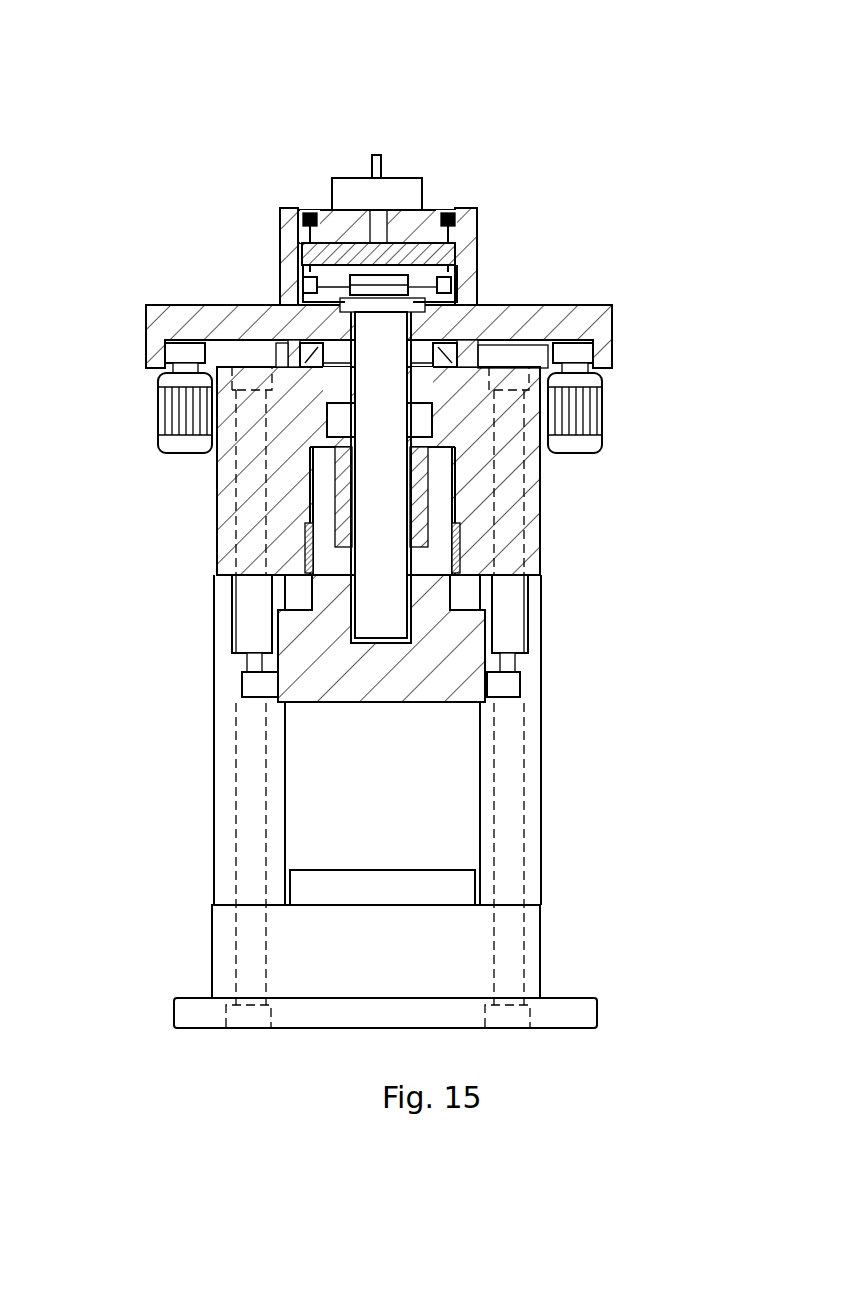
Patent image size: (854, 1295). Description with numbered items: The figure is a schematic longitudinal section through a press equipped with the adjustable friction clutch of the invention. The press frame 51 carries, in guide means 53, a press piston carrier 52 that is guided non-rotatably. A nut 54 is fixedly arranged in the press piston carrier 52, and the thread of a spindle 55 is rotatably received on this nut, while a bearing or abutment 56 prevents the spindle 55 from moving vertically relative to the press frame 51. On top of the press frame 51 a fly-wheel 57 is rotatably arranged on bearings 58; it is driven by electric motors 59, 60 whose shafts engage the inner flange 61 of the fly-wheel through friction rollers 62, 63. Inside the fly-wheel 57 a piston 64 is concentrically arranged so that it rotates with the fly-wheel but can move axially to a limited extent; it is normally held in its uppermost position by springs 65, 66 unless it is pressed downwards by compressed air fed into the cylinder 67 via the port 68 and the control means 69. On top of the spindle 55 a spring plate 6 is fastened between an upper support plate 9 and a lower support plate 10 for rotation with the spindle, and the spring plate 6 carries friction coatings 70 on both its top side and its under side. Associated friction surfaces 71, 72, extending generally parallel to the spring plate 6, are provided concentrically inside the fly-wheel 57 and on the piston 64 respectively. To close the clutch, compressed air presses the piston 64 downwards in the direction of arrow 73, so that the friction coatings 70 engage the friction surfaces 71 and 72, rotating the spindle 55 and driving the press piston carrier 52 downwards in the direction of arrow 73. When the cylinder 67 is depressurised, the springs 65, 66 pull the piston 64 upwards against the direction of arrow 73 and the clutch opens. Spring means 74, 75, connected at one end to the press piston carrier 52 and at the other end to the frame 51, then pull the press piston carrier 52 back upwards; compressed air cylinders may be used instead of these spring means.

The spring plate 6 is at (290, 326).
The upper support plate 9 is at (322, 262).
The lower support plate 10 is at (285, 363).
The press frame 51 is at (228, 525).
The press piston carrier 52 is at (402, 693).
The guide means 53 is at (275, 752).
The nut 54 is at (420, 482).
The spindle 55 is at (380, 560).
The bearing or abutment 56 is at (395, 425).
The fly-wheel 57 is at (605, 318).
The bearings 58 is at (456, 312).
The electric motor 59 is at (583, 407).
The electric motor 60 is at (184, 413).
The inner flange 61 is at (180, 352).
The friction roller 62 is at (582, 360).
The friction roller 63 is at (286, 355).
The piston 64 is at (423, 197).
The spring 65 is at (447, 213).
The spring 66 is at (300, 222).
The cylinder 67 is at (392, 218).
The port 68 is at (376, 163).
The control means 69 is at (343, 190).
The friction coatings 70 is at (333, 284).
The friction surface 71 is at (446, 297).
The friction surface 72 is at (467, 213).
The arrow 73 is at (290, 165).
The spring means 74 is at (510, 617).
The spring means 75 is at (247, 617).